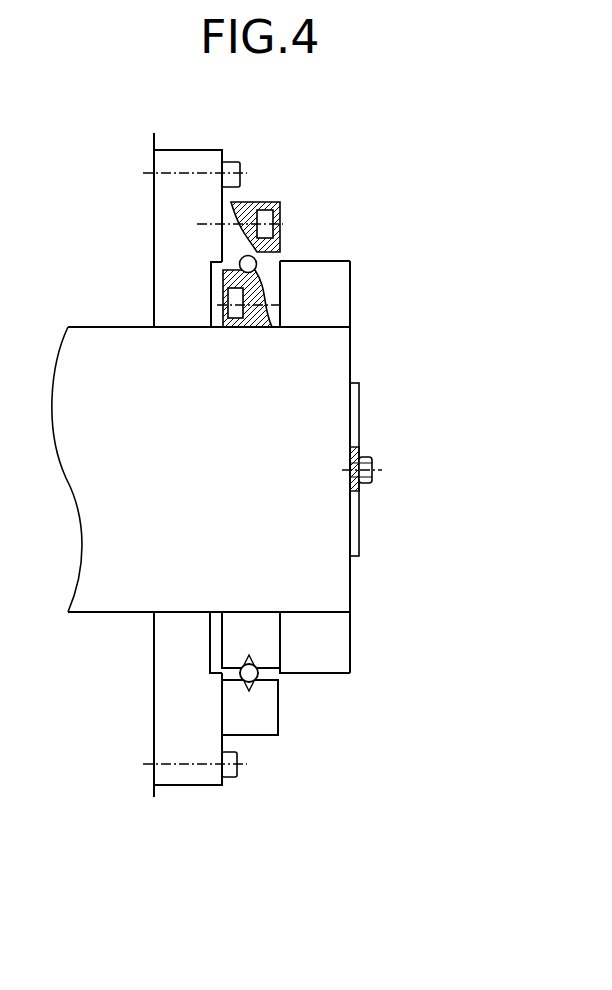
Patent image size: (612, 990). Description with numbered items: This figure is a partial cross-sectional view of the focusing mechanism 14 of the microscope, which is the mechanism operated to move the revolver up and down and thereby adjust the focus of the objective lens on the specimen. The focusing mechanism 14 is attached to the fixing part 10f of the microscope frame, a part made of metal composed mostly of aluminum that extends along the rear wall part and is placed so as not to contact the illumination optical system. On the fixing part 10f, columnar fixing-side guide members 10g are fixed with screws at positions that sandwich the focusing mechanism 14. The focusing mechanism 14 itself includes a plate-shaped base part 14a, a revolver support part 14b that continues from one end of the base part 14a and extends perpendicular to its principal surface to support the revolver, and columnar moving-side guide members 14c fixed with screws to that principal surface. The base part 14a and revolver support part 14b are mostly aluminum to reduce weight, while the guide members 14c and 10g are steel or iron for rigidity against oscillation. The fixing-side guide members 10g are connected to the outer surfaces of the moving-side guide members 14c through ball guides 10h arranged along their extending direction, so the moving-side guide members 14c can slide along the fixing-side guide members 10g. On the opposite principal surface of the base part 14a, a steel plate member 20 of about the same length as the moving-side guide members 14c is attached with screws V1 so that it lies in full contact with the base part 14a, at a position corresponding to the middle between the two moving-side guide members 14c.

The focusing mechanism 14 is at (376, 352).
The base part 14a is at (332, 643).
The revolver support part 14b is at (332, 588).
The moving-side guide members 14c is at (223, 273).
The fixing part 10f is at (182, 773).
The fixing-side guide members 10g is at (272, 201).
The ball guides 10h is at (265, 252).
The plate member 20 is at (355, 418).
The screws V1 is at (373, 463).